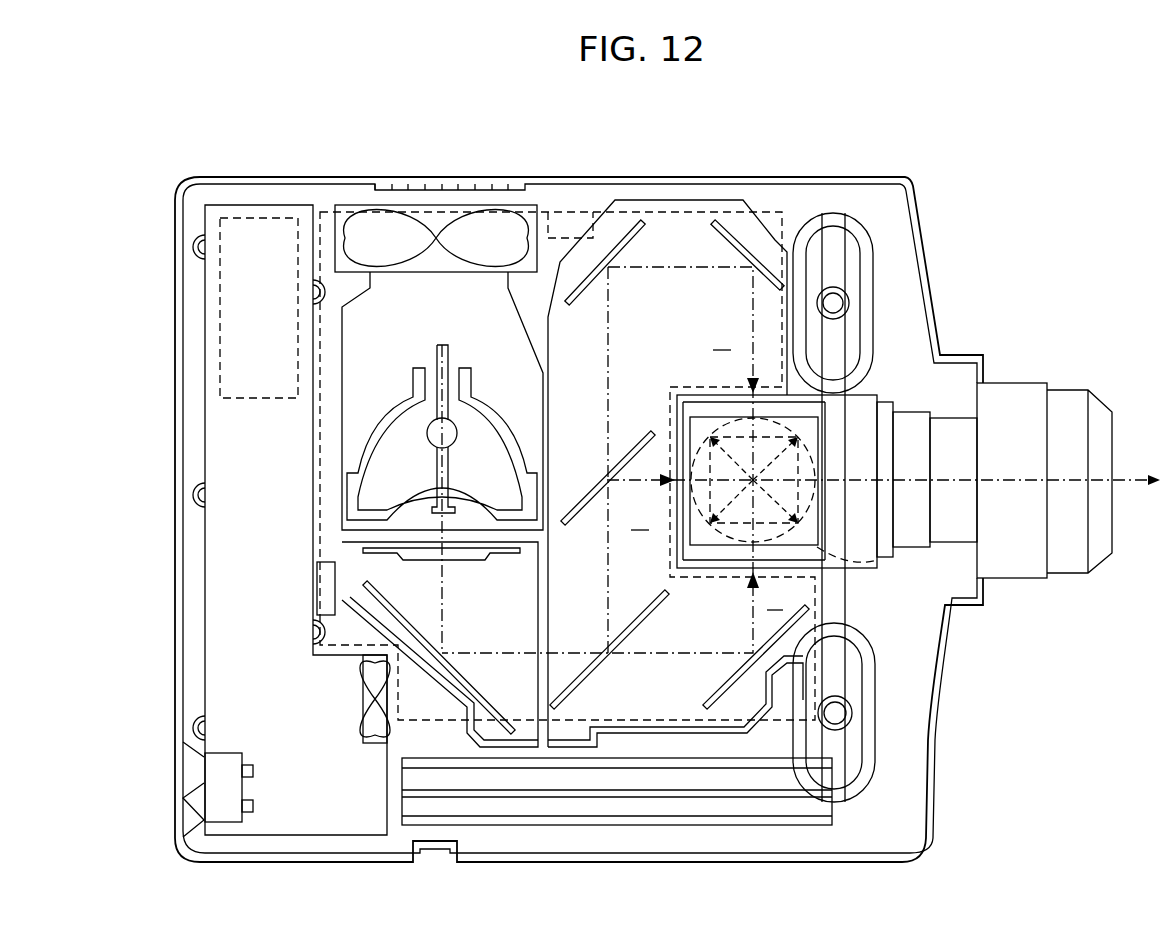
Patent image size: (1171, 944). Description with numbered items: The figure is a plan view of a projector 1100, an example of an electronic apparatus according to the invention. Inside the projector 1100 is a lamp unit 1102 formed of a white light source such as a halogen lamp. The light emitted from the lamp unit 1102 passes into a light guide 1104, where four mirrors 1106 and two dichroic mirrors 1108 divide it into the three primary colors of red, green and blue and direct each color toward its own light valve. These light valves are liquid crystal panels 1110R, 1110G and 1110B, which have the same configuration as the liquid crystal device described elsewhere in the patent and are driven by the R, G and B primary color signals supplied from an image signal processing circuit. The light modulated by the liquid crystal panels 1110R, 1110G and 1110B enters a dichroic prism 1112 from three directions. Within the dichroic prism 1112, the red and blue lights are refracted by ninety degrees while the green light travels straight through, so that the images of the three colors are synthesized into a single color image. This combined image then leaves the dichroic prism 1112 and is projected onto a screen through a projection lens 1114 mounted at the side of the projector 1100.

The projector 1100 is at (942, 181).
The lamp unit 1102 is at (490, 327).
The light guide 1104 is at (610, 207).
The mirror 1106 is at (727, 245).
The dichroic mirror 1108 is at (603, 498).
The liquid crystal panel 1110R is at (718, 392).
The liquid crystal panel 1110G is at (683, 448).
The liquid crystal panel 1110B is at (710, 567).
The dichroic prism 1112 is at (881, 567).
The projection lens 1114 is at (1078, 400).